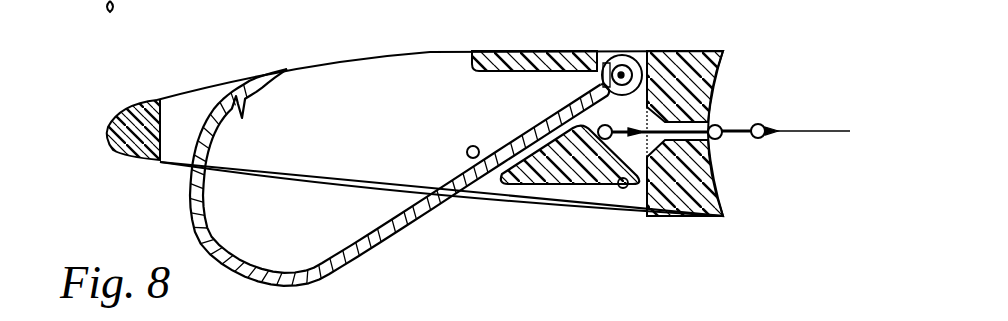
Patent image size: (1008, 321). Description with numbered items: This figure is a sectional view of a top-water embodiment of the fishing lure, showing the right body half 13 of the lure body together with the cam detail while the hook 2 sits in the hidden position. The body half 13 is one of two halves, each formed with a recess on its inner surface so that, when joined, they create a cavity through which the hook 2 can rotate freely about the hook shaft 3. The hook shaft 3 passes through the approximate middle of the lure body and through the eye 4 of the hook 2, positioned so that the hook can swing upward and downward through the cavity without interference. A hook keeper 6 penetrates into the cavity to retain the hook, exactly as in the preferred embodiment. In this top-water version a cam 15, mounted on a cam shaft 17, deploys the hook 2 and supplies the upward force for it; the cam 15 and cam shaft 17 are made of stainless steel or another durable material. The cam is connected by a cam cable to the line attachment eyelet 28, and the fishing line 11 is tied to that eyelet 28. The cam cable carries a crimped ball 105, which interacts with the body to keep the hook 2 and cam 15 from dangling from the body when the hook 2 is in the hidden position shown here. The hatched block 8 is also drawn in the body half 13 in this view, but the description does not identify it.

The hook 2 is at (199, 233).
The hook shaft 3 is at (610, 62).
The eye of hook 4 is at (636, 52).
The hook keeper 6 is at (468, 147).
The insert weight 8 is at (503, 50).
The fishing line 11 is at (807, 135).
The body half 13 is at (371, 134).
The cam 15 is at (570, 176).
The cam shaft 17 is at (624, 189).
The line attachment eyelet 28 is at (762, 140).
The crimped ball 105 is at (718, 125).